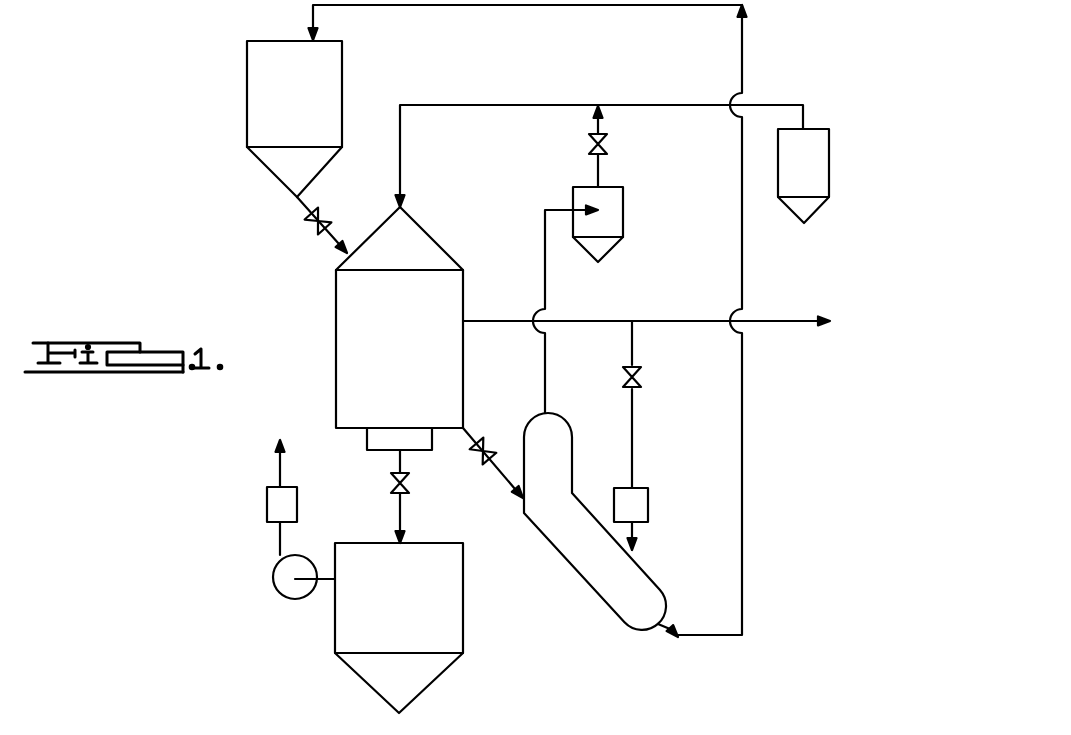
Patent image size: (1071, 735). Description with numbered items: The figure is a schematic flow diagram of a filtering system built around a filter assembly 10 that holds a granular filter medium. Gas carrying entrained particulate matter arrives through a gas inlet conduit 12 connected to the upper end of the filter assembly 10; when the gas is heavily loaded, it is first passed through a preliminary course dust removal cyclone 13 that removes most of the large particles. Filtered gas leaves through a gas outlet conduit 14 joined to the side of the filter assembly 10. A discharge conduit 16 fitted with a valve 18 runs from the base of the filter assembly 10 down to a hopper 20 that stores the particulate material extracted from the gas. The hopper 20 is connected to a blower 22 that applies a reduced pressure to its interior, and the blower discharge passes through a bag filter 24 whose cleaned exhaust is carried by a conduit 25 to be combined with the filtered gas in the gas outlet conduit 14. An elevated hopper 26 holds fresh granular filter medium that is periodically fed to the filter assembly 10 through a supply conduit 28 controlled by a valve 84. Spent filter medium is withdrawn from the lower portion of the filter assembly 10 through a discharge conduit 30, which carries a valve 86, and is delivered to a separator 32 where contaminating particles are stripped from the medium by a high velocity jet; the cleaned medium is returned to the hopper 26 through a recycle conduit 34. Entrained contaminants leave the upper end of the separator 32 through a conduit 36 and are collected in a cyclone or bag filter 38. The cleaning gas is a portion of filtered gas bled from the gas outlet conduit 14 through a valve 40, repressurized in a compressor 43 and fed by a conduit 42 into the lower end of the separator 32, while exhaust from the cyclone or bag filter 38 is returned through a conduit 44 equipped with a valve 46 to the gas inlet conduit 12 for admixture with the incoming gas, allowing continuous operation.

The filter assembly 10 is at (350, 305).
The gas inlet conduit 12 is at (505, 105).
The preliminary course dust removal cyclone 13 is at (817, 179).
The gas outlet conduit 14 is at (587, 321).
The discharge conduit 16 is at (402, 458).
The valve 18 is at (392, 492).
The hopper 20 is at (348, 628).
The blower 22 is at (277, 592).
The bag filter 24 is at (267, 503).
The conduit 25 is at (280, 462).
The hopper 26 is at (257, 89).
The supply conduit 28 is at (330, 248).
The discharge conduit 30 is at (505, 485).
The separator 32 is at (598, 578).
The recycle conduit 34 is at (742, 535).
The conduit 36 is at (542, 262).
The cyclone or bag filter 38 is at (620, 212).
The valve 40 is at (647, 377).
The conduit 42 is at (633, 470).
The compressor 43 is at (640, 505).
The conduit 44 is at (602, 170).
The valve 46 is at (605, 152).
The feed valve 84 is at (312, 226).
The transfer valve 86 is at (493, 447).